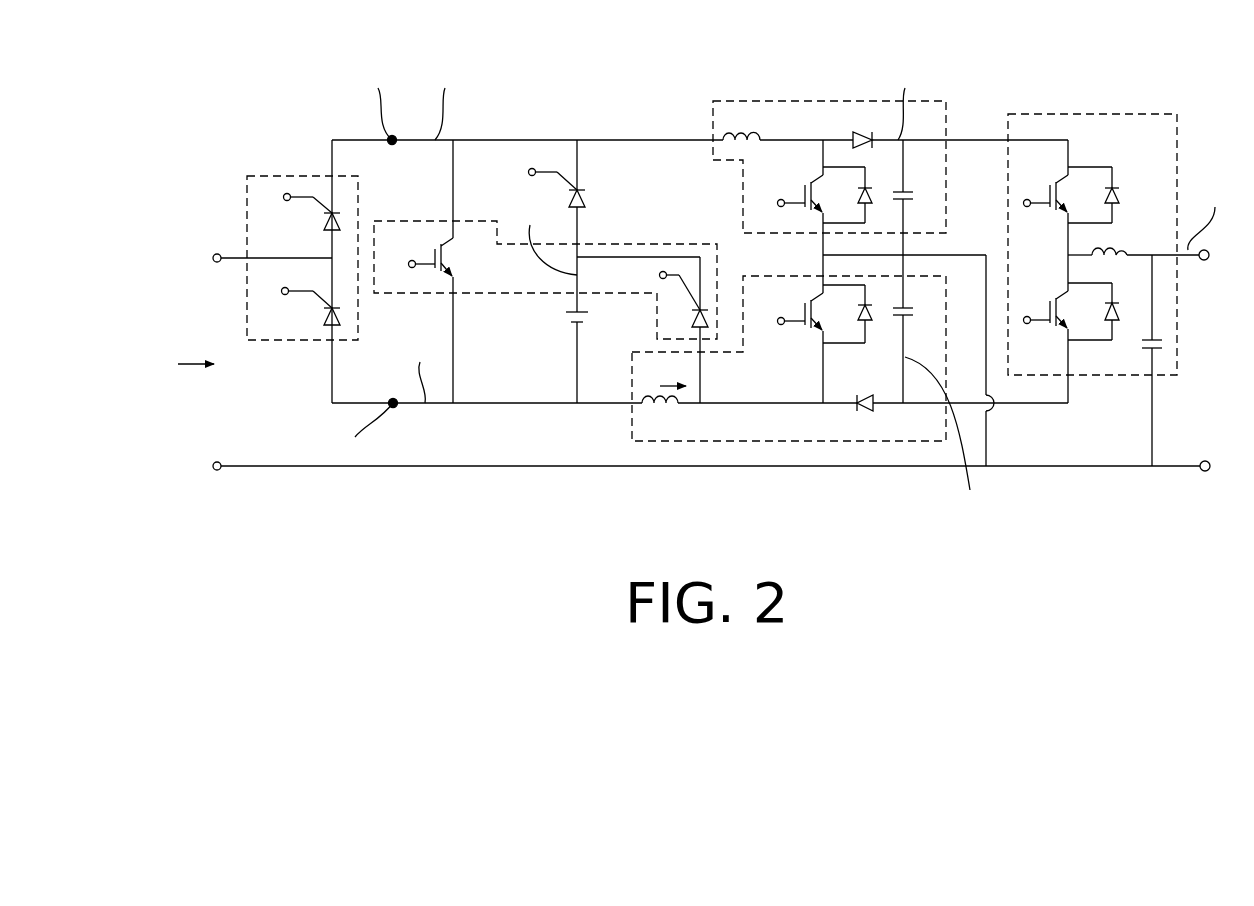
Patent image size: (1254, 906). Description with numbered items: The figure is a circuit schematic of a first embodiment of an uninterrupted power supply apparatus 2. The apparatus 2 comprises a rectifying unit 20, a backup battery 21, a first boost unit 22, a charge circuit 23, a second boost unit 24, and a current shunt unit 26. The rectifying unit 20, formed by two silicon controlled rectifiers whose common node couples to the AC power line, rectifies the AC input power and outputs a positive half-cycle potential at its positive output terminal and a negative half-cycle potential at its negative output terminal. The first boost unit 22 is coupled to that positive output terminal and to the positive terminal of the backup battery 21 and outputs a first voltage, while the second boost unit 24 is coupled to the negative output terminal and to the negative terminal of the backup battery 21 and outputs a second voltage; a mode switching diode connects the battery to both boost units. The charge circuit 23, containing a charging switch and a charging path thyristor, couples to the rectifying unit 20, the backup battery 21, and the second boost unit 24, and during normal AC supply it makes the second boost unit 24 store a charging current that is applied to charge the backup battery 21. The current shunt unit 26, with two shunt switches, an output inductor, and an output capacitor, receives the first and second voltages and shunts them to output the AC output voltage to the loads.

The uninterrupted power supply apparatus 2 is at (268, 34).
The rectifying unit 20 is at (290, 176).
The backup battery 21 is at (564, 331).
The first boost unit 22 is at (820, 101).
The charge circuit 23 is at (414, 221).
The second boost unit 24 is at (800, 443).
The current shunt unit 26 is at (1097, 114).